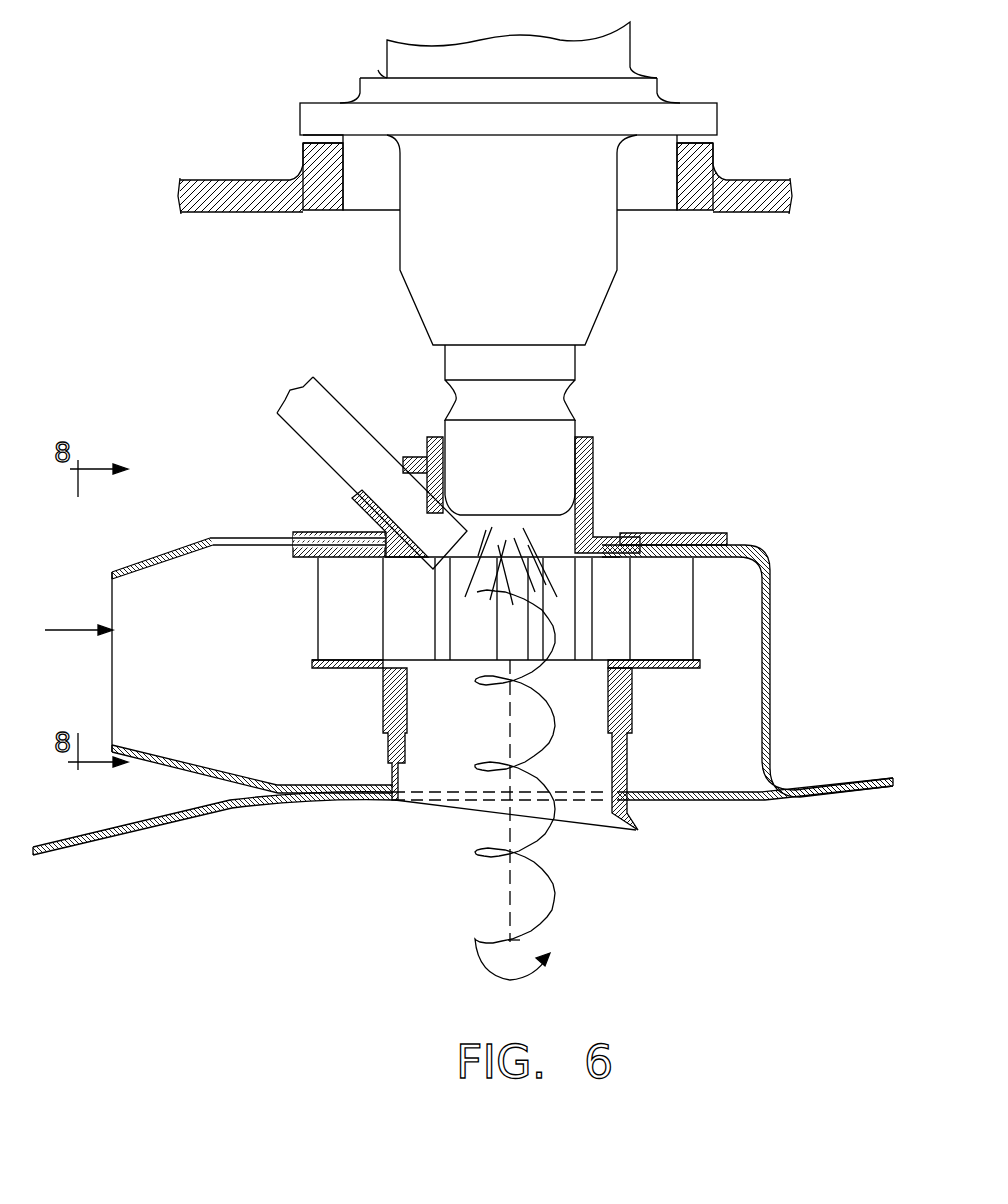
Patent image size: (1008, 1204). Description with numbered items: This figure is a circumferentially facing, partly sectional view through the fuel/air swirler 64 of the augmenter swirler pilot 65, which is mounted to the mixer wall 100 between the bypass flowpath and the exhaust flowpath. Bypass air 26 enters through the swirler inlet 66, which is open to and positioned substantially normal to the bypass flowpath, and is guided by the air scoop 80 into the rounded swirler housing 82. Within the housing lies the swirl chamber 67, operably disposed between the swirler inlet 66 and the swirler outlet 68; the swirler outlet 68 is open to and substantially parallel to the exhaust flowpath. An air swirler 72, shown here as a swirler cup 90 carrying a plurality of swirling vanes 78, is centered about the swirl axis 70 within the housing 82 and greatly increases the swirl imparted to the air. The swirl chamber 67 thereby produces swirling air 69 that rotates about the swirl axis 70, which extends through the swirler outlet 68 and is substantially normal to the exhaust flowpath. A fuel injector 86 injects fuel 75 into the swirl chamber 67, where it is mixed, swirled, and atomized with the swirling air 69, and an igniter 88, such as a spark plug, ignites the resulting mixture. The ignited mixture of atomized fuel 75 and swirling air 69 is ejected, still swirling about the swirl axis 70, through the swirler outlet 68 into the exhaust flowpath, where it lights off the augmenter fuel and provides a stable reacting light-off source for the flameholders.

The augmenter swirler pilot 65 is at (128, 340).
The fuel injector 86 is at (613, 298).
The igniter 88 is at (333, 397).
The rounded swirler housing 82 is at (243, 538).
The swirler inlet 66 is at (112, 675).
The bypass air 26 is at (70, 624).
The air scoop 80 is at (178, 768).
The mixer wall 100 is at (98, 835).
The fuel/air swirler 64 is at (745, 540).
The swirl chamber 67 is at (745, 697).
The air swirler 72 is at (697, 607).
The swirling vanes 78 is at (697, 640).
The fuel 75 is at (553, 582).
The swirler cup 90 is at (630, 717).
The swirler outlet 68 is at (573, 825).
The swirling air 69 is at (472, 860).
The swirl axis 70 is at (512, 940).